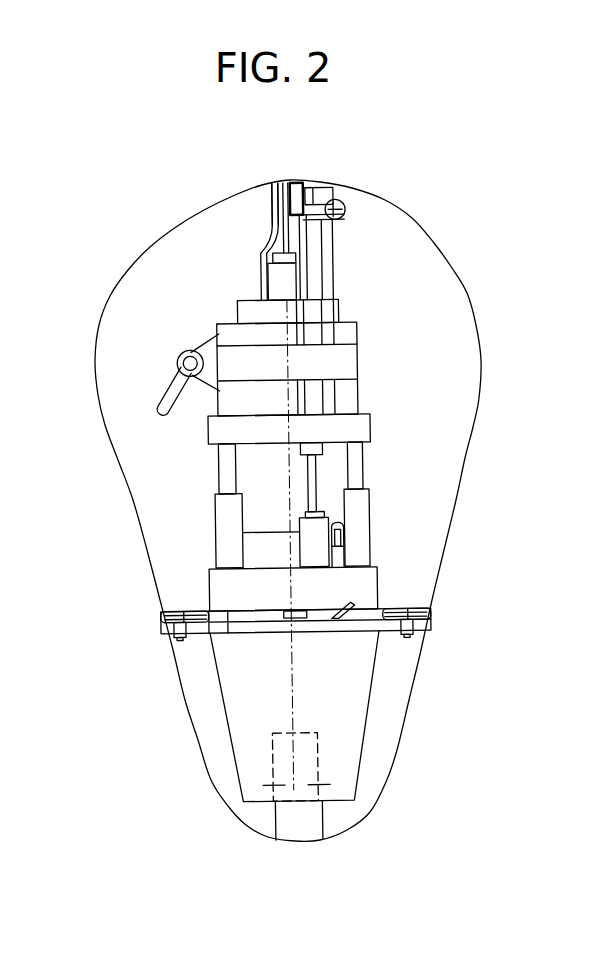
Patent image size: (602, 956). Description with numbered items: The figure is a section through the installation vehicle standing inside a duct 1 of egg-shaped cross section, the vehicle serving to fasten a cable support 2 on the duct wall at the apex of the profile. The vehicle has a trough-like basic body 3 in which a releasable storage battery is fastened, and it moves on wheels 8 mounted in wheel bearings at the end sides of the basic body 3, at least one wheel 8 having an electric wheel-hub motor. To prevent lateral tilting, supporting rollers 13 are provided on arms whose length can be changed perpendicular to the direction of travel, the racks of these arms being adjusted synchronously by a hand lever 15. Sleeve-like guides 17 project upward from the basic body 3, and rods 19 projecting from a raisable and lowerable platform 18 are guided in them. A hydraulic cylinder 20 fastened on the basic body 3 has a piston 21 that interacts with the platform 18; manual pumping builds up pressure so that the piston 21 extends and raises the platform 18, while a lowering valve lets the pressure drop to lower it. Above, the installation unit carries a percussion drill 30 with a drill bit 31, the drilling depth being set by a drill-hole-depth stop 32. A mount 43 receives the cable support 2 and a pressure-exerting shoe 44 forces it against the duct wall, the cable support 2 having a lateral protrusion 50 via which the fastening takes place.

The duct 1 is at (463, 292).
The cable support 2 is at (310, 184).
The trough-like basic body 3 is at (352, 718).
The wheels 8 is at (290, 812).
The supporting rollers 13 is at (432, 607).
The hand lever 15 is at (303, 622).
The sleeve-like guides 17 is at (360, 510).
The raisable and lowerable platform 18 is at (350, 430).
The rods 19 is at (357, 472).
The hydraulic cylinder 20 is at (313, 537).
The piston 21 is at (313, 480).
The percussion drill 30 is at (277, 275).
The drill bit 31 is at (273, 183).
The drill-hole-depth stop 32 is at (263, 240).
The mount 43 is at (343, 240).
The pressure-exerting shoe 44 is at (327, 189).
The lateral protrusion 50 is at (285, 180).